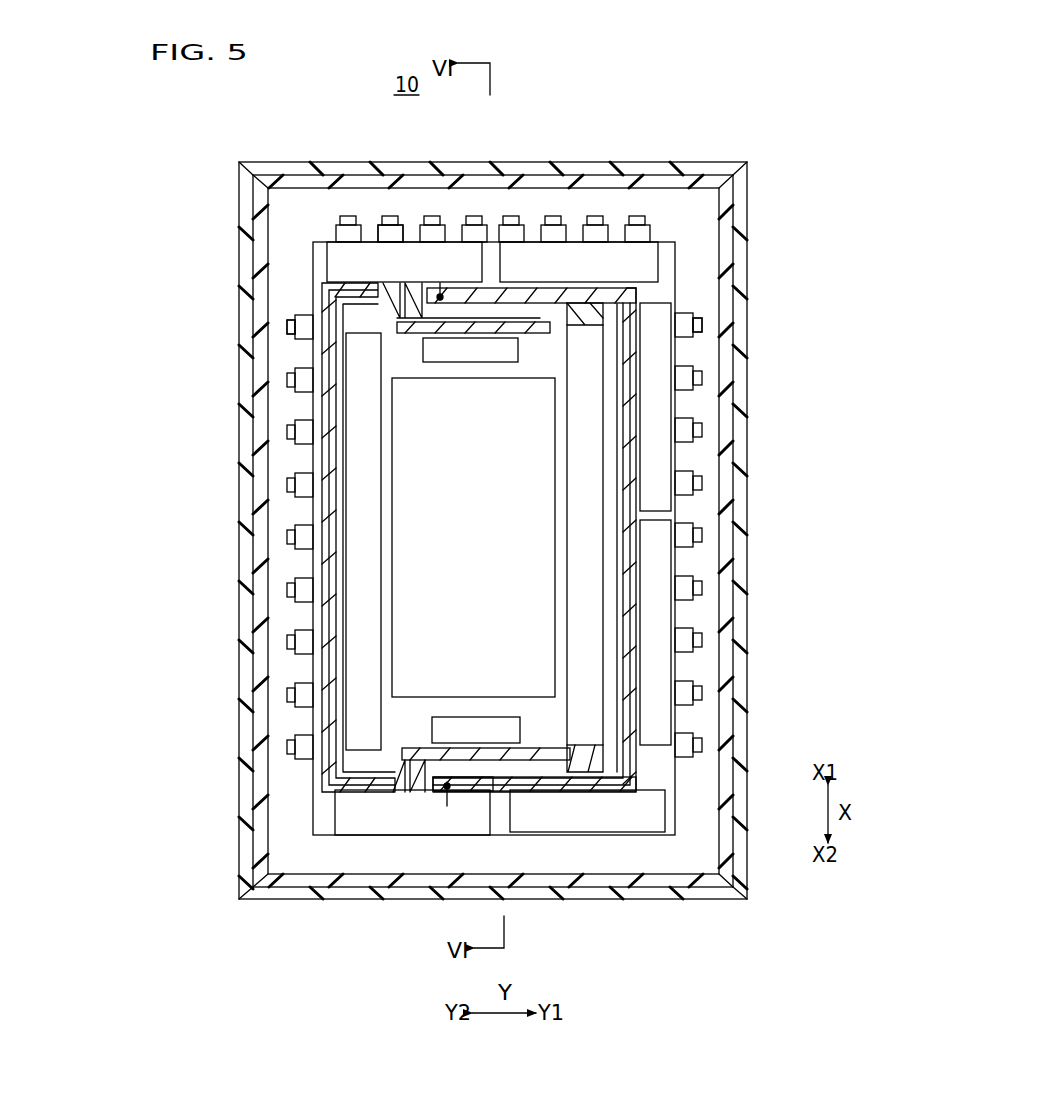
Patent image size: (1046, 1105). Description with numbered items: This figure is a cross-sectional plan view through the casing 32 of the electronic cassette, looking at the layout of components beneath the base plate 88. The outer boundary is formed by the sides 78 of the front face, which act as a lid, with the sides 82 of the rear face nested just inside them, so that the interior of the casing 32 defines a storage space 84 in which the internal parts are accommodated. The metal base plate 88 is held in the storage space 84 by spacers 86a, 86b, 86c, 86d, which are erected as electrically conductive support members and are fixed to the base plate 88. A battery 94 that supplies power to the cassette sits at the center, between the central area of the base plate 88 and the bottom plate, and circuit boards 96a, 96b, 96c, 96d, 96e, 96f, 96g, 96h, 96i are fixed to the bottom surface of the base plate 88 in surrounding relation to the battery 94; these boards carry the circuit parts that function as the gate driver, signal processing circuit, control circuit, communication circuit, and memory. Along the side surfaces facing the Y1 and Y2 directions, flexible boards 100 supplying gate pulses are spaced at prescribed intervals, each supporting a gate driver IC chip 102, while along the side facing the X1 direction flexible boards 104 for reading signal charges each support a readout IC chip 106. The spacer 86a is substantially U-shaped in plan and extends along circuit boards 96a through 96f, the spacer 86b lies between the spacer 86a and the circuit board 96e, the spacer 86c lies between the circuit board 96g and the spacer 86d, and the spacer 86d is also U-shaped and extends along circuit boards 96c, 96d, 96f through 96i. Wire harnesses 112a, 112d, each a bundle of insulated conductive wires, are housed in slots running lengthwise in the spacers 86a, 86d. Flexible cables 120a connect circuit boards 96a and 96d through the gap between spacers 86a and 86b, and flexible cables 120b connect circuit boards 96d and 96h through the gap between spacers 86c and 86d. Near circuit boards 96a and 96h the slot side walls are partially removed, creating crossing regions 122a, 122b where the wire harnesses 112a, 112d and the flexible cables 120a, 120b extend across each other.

The casing 32 is at (752, 156).
The sides 78 is at (736, 181).
The sides 82 is at (720, 214).
The storage space 84 is at (698, 205).
The spacer 86a is at (336, 656).
The spacer 86b is at (425, 746).
The spacer 86c is at (470, 322).
The spacer 86d is at (326, 306).
The base plate 88 is at (666, 257).
The battery 94 is at (406, 537).
The circuit board 96a is at (396, 822).
The circuit board 96b is at (630, 822).
The circuit board 96c is at (655, 410).
The circuit board 96d is at (584, 572).
The circuit board 96e is at (484, 726).
The circuit board 96f is at (356, 573).
The circuit board 96g is at (432, 354).
The circuit board 96h is at (342, 264).
The circuit board 96i is at (636, 268).
The flexible board 100 is at (302, 372).
The gate driver IC chip 102 is at (287, 328).
The flexible board 104 is at (457, 240).
The readout IC chip 106 is at (390, 222).
The wire harness 112a is at (336, 714).
The wire harness 112d is at (340, 472).
The flexible cable 120a is at (545, 762).
The flexible cable 120b is at (547, 336).
The crossing region 122a is at (380, 770).
The crossing region 122b is at (386, 292).